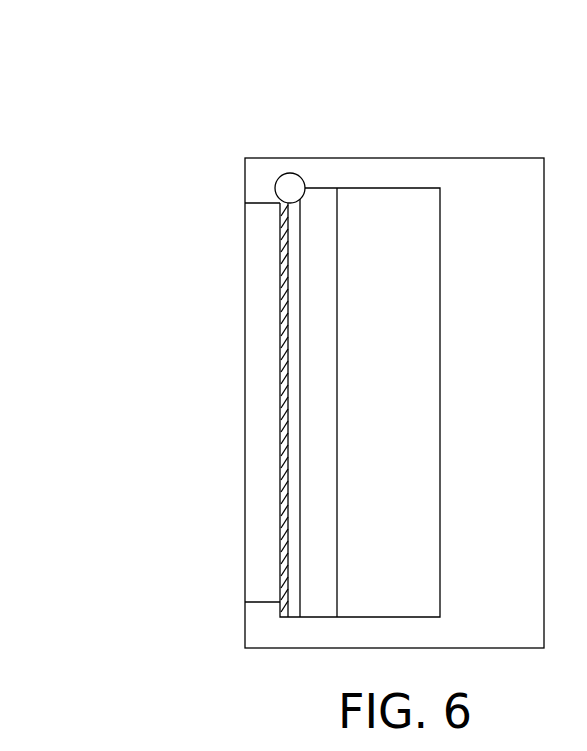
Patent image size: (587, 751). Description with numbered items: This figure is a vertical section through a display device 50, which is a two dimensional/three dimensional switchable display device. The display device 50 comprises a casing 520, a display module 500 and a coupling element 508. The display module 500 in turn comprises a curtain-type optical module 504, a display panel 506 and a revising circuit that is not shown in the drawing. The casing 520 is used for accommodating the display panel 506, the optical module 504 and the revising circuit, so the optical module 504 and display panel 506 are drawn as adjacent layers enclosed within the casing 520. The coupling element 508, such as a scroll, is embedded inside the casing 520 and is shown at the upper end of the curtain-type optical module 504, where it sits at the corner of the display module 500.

The display device 50 is at (49, 49).
The display module 500 is at (292, 88).
The optical module 504 is at (282, 218).
The display panel 506 is at (378, 218).
The coupling element 508 is at (285, 188).
The casing 520 is at (498, 198).